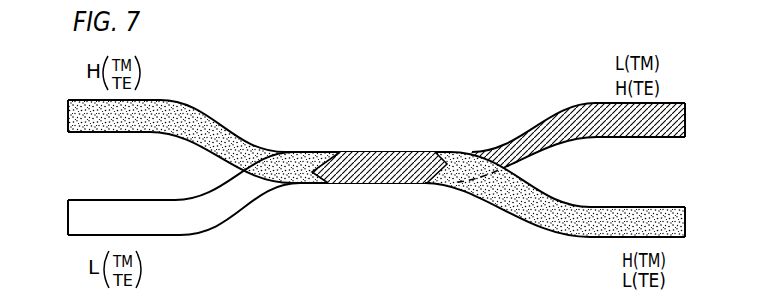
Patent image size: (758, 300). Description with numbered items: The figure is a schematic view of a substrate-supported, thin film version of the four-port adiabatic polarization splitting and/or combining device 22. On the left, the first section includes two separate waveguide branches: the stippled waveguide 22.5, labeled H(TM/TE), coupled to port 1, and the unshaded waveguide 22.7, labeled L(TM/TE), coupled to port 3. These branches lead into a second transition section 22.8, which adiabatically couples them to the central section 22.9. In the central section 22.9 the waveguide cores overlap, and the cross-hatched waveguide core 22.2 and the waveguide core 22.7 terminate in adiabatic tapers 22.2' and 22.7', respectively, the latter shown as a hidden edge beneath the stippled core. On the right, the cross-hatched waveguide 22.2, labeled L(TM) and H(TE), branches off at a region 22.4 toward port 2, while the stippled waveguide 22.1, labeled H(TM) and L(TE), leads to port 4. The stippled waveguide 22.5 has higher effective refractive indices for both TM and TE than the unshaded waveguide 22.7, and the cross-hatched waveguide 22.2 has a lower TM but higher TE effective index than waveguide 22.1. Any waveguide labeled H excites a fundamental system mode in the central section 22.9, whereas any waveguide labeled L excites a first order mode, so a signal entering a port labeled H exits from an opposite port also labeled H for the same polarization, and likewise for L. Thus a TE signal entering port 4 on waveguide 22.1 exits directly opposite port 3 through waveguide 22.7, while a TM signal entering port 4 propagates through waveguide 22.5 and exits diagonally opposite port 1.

The 4-port adiabatic polarization splitting and/or combining device 22 is at (389, 74).
The waveguide 22.1 is at (577, 210).
The cross-hatched waveguide 22.2 is at (565, 143).
The adiabatic taper 22.2' is at (379, 143).
The second waveguide branch-off 22.4 is at (480, 152).
The stippled waveguide branch 22.5 is at (72, 133).
The unshaded waveguide branch 22.7 is at (184, 193).
The adiabatic taper 22.7' is at (521, 189).
The second transition section 22.8 is at (276, 152).
The central section 22.9 is at (465, 201).
The port 1 is at (39, 118).
The port 2 is at (716, 122).
The port 3 is at (38, 219).
The port 4 is at (716, 225).